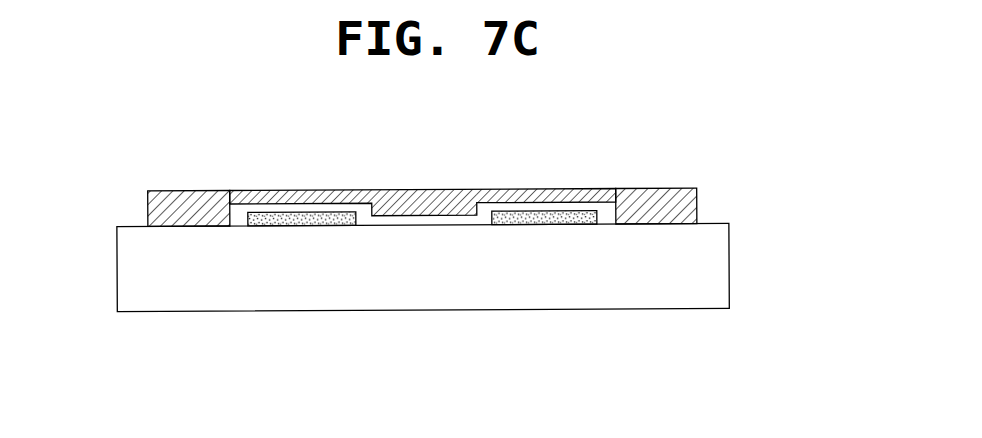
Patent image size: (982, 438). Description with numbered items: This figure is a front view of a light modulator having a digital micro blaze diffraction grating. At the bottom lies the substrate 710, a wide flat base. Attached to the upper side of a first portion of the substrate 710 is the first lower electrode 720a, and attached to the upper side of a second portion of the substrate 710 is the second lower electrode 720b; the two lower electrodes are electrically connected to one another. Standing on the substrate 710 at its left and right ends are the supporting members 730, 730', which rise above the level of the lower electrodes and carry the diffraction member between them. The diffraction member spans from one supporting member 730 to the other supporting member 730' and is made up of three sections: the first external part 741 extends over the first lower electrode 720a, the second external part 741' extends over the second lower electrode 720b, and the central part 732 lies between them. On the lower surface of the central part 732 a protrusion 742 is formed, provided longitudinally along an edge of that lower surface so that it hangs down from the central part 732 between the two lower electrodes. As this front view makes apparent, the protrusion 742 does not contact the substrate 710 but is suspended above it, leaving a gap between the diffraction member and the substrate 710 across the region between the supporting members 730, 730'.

The substrate 710 is at (722, 272).
The first lower electrode 720a is at (308, 217).
The second lower electrode 720b is at (557, 217).
The supporting member 730 is at (136, 209).
The supporting member 730' is at (709, 206).
The central part 732 is at (416, 195).
The first external part 741 is at (301, 160).
The second external part 741' is at (546, 158).
The protrusion 742 is at (458, 202).